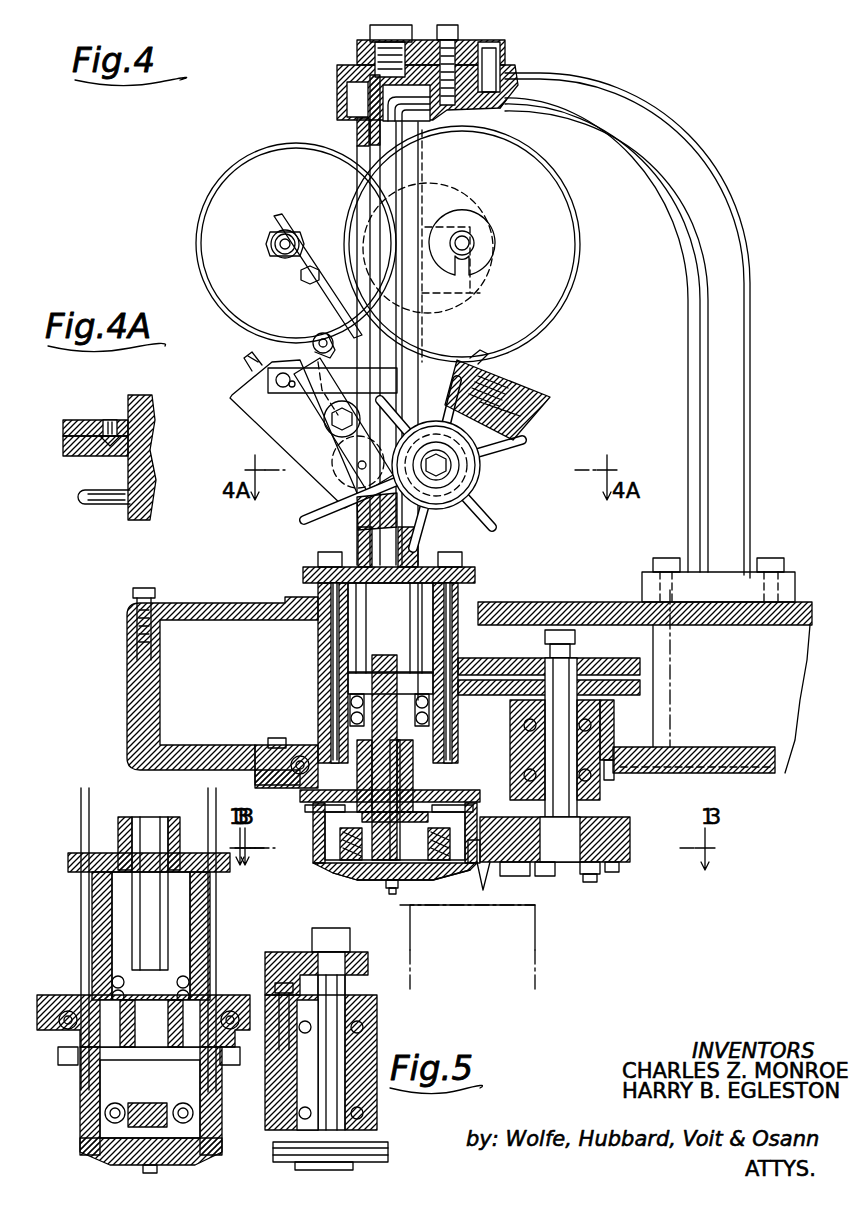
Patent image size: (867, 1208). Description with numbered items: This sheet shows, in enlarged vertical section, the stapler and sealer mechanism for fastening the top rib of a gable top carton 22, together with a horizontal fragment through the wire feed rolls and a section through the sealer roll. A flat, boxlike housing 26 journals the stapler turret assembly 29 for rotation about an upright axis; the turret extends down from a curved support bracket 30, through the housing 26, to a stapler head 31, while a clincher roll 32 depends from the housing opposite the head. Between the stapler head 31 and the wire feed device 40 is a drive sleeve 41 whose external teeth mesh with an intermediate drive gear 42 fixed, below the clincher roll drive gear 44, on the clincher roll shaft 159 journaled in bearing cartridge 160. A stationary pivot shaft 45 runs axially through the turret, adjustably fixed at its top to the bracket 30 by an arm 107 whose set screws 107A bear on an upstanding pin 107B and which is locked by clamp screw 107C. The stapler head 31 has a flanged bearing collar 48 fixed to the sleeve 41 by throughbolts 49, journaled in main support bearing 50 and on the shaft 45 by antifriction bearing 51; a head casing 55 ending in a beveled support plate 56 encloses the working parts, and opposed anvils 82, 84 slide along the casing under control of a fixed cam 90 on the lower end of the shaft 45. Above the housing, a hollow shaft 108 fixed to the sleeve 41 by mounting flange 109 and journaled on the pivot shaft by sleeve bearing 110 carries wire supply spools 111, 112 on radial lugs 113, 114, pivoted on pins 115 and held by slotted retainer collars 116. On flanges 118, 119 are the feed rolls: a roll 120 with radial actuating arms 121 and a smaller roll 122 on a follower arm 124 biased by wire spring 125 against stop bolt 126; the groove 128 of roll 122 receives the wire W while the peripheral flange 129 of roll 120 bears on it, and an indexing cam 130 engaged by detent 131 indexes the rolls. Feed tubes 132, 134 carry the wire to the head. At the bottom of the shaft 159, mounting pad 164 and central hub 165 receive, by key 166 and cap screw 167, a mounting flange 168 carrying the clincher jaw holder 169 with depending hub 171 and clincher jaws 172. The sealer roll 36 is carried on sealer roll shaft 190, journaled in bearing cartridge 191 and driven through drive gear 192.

In FIG. 4, the carton 22 is at (538, 970).
In FIG. 4, the housing 26 is at (126, 703).
In FIG. 4, the stapler turret assembly 29 is at (345, 523).
In FIG. 4, the curved support bracket 30 is at (682, 150).
In FIG. 4, the stapler head 31 is at (308, 832).
In FIG. 5, the stapler head 31 is at (78, 1132).
In FIG. 4, the clincher roll 32 is at (632, 848).
In FIG. 5, the sealer roll 36 is at (365, 1140).
In FIG. 4, the wire feed device 40 is at (270, 447).
In FIG. 4, the drive sleeve 41 is at (346, 636).
In FIG. 5, the drive sleeve 41 is at (220, 902).
In FIG. 4, the intermediate drive gear 42 is at (622, 689).
In FIG. 4, the clincher roll drive gear 44 is at (594, 662).
In FIG. 4, the pivot shaft 45 is at (378, 645).
In FIG. 5, the pivot shaft 45 is at (140, 832).
In FIG. 4, the flanged bearing collar 48 is at (470, 802).
In FIG. 5, the flanged bearing collar 48 is at (224, 1005).
In FIG. 4, the throughbolts 49 is at (328, 655).
In FIG. 4, the main support bearing 50 is at (290, 782).
In FIG. 4, the antifriction bearing 51 is at (345, 706).
In FIG. 5, the antifriction bearing 51 is at (110, 990).
In FIG. 4, the head casing 55 is at (322, 789).
In FIG. 4, the support plate 56 is at (350, 878).
In FIG. 5, the support plate 56 is at (200, 1148).
In FIG. 4, the anvil 82 is at (466, 818).
In FIG. 4, the anvil 84 is at (313, 850).
In FIG. 4, the fixed cam 90 is at (318, 806).
In FIG. 5, the fixed cam 90 is at (98, 1082).
In FIG. 4, the arm 107 is at (427, 38).
In FIG. 4, the set screws 107A is at (506, 40).
In FIG. 4, the upstanding pin 107B is at (518, 66).
In FIG. 4, the clamp screw 107C is at (455, 28).
In FIG. 4, the hollow shaft 108 is at (355, 537).
In FIG. 5, the hollow shaft 108 is at (120, 818).
In FIG. 4, the mounting flange 109 is at (470, 566).
In FIG. 4, the sleeve bearing 110 is at (355, 132).
In FIG. 4, the wire supply spool 111 is at (550, 305).
In FIG. 4, the wire supply spool 112 is at (208, 222).
In FIG. 4, the radial lug 113 is at (482, 294).
In FIG. 4, the radial lug 114 is at (306, 290).
In FIG. 4, the pins 115 is at (310, 232).
In FIG. 4, the slotted retainer collars 116 is at (486, 260).
In FIG. 4, the flange 118 is at (514, 434).
In FIG. 4, the flange 119 is at (255, 400).
In FIG. 4, the roll 120 is at (456, 530).
In FIG. 4A, the roll 120 is at (152, 470).
In FIG. 4, the radial actuating arms 121 is at (514, 455).
In FIG. 4A, the radial actuating arms 121 is at (104, 505).
In FIG. 4, the roll 122 is at (340, 482).
In FIG. 4A, the roll 122 is at (66, 456).
In FIG. 4, the follower arm 124 is at (338, 452).
In FIG. 4, the wire spring 125 is at (316, 336).
In FIG. 4, the stop bolt 126 is at (300, 277).
In FIG. 4A, the groove 128 is at (95, 450).
In FIG. 4A, the peripheral flange 129 is at (116, 450).
In FIG. 4, the indexing cam 130 is at (484, 484).
In FIG. 4A, the indexing cam 130 is at (132, 396).
In FIG. 4, the spring-loaded detent 131 is at (516, 418).
In FIG. 5, the feed tube 132 is at (208, 790).
In FIG. 5, the feed tube 134 is at (80, 790).
In FIG. 4, the clincher roll shaft 159 is at (560, 630).
In FIG. 4, the bearing cartridge 160 is at (600, 798).
In FIG. 4, the circular mounting pad 164 is at (590, 818).
In FIG. 4, the central hub 165 is at (554, 872).
In FIG. 4, the key 166 is at (590, 876).
In FIG. 4, the cap screw 167 is at (494, 886).
In FIG. 4, the mounting flange 168 is at (630, 822).
In FIG. 4, the clincher jaw holder 169 is at (630, 836).
In FIG. 4, the depending hub 171 is at (524, 874).
In FIG. 4, the clincher jaws 172 is at (474, 870).
In FIG. 5, the sealer roll shaft 190 is at (335, 1048).
In FIG. 5, the bearing cartridge 191 is at (266, 1085).
In FIG. 5, the drive gear 192 is at (264, 950).
In FIG. 4A, the wire W is at (105, 420).